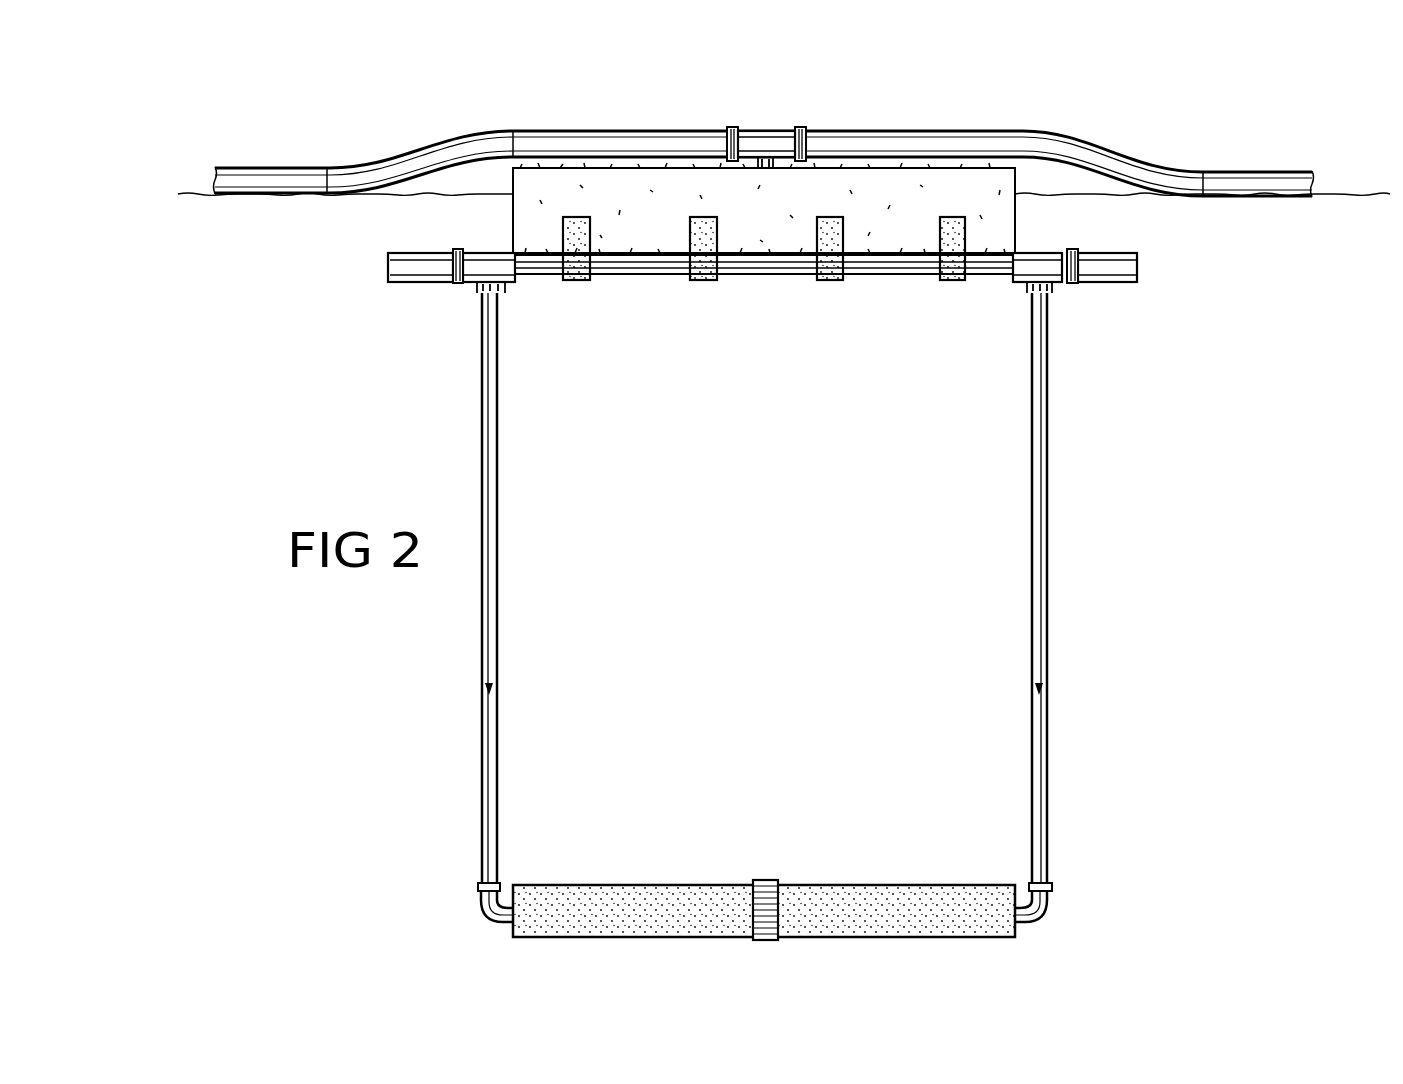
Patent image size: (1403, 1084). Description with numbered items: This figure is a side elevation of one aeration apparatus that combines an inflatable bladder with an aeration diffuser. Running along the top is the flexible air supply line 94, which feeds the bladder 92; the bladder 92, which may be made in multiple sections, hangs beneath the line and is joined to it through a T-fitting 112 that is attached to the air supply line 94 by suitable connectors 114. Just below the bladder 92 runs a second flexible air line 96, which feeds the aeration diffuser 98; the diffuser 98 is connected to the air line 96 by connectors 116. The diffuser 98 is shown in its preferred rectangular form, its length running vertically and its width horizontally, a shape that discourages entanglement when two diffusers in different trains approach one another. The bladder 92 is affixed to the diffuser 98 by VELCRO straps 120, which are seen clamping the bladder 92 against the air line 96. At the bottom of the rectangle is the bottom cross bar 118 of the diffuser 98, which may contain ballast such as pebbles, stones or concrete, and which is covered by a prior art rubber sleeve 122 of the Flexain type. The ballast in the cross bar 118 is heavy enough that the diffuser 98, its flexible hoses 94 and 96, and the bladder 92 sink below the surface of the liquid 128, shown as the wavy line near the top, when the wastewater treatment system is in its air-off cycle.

The bladder 92 is at (995, 212).
The flexible air line 94 is at (1010, 140).
The flexible air line 96 is at (1133, 270).
The aeration diffuser 98 is at (482, 757).
The T-fitting 112 is at (766, 142).
The connector 114 is at (731, 127).
The connector 116 is at (1073, 283).
The bottom cross bar 118 is at (478, 900).
The strap 120 is at (830, 280).
The rubber sleeve 122 is at (850, 905).
The surface of the liquid 128 is at (1342, 172).